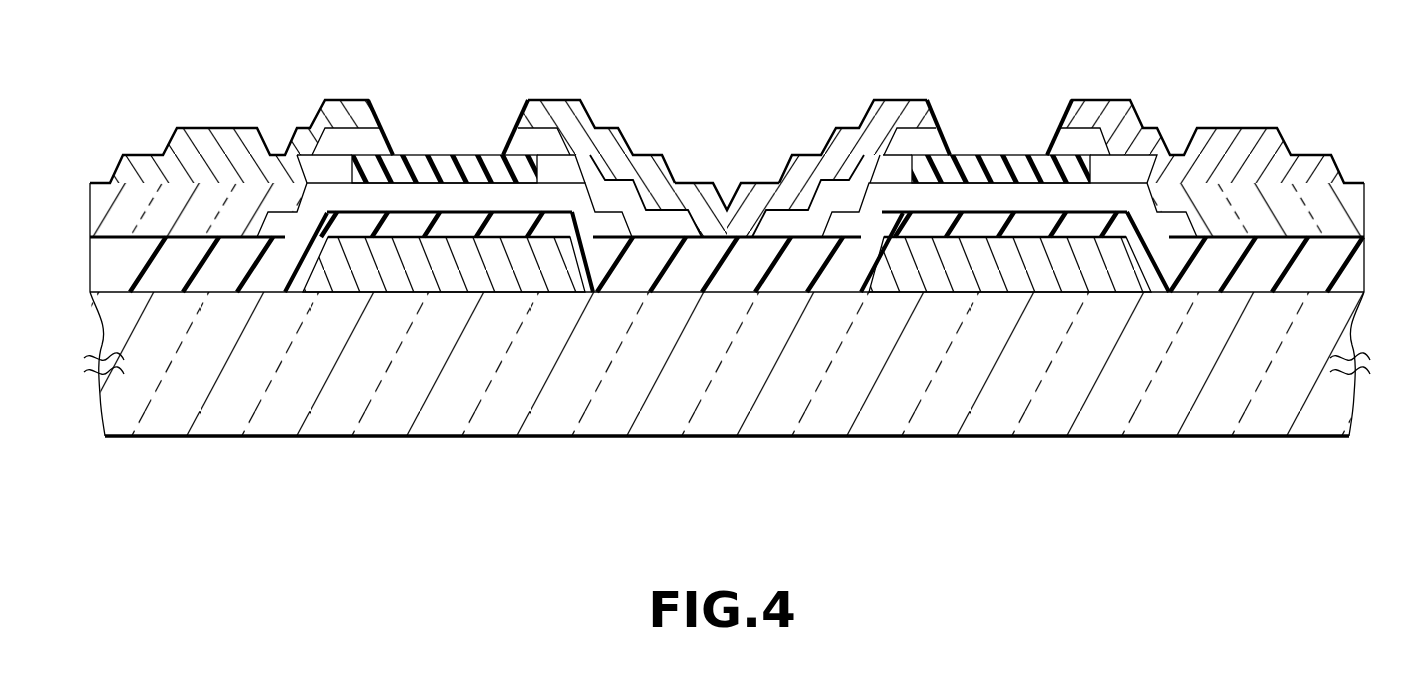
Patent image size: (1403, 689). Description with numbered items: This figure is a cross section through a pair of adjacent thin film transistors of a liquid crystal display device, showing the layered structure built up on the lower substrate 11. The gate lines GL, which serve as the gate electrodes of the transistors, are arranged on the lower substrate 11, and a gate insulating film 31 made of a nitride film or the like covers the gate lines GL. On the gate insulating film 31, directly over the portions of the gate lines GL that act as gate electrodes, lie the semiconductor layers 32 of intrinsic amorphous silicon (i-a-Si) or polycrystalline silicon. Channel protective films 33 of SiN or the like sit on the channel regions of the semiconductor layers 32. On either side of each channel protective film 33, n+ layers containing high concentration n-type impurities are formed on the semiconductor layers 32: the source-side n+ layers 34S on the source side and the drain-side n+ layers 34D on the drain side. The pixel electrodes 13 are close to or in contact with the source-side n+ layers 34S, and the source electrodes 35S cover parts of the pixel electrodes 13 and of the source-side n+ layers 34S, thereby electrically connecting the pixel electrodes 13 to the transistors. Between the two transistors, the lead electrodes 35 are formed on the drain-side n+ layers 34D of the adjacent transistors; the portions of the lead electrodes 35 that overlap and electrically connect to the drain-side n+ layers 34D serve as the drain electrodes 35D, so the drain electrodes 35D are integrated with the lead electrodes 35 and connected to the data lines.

The lower substrate 11 is at (775, 406).
The gate lines GL is at (460, 268).
The gate insulating film 31 is at (1203, 268).
The pixel electrodes 13 is at (204, 192).
The semiconductor layers 32 is at (400, 190).
The channel protective films 33 is at (462, 166).
The source-side n+ layers 34S is at (353, 140).
The drain-side n+ layers 34D is at (532, 140).
The source electrodes 35S is at (255, 153).
The drain electrodes 35D is at (573, 127).
The lead electrodes 35 is at (713, 200).